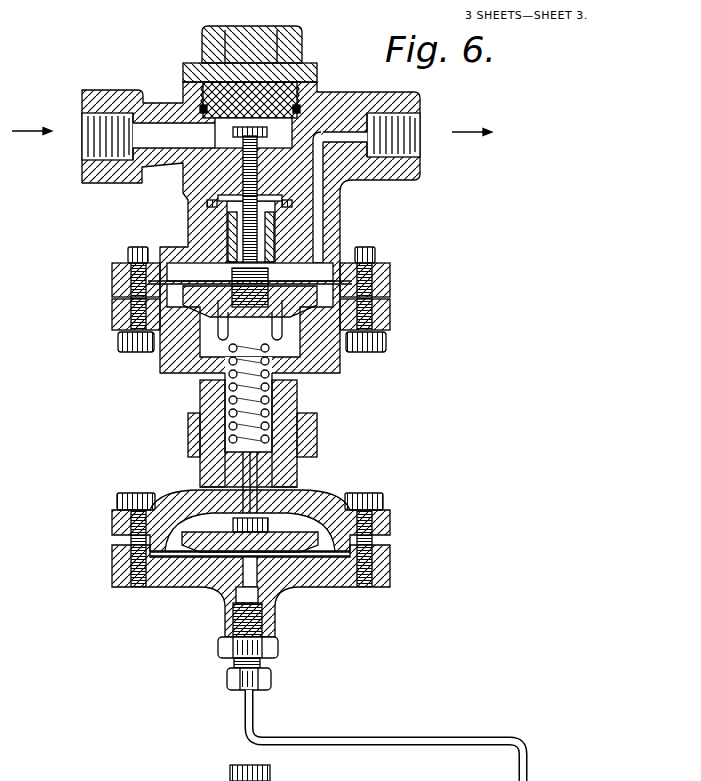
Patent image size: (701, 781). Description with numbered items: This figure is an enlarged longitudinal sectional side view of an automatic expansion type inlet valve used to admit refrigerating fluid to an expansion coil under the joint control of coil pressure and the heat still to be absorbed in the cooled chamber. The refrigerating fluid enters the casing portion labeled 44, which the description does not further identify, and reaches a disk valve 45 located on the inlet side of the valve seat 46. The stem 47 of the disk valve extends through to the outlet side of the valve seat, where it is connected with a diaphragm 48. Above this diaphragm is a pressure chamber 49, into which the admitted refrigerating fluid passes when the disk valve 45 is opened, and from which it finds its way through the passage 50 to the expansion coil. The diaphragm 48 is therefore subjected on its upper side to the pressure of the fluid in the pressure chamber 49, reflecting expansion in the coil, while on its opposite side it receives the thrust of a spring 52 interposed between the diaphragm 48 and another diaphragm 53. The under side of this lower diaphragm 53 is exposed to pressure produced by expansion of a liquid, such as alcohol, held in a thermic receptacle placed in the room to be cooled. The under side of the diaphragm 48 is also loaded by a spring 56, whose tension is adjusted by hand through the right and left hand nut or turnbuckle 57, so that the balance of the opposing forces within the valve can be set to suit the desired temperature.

The valve body 44 is at (143, 170).
The disk valve 45 is at (243, 134).
The valve seat 46 is at (288, 137).
The stem 47 is at (245, 200).
The diaphragm 48 is at (183, 277).
The pressure chamber 49 is at (343, 252).
The passage 50 is at (318, 201).
The spring 52 is at (292, 318).
The diaphragm 53 is at (197, 553).
The spring 56 is at (272, 399).
The right and left hand nut or turnbuckle 57 is at (314, 443).